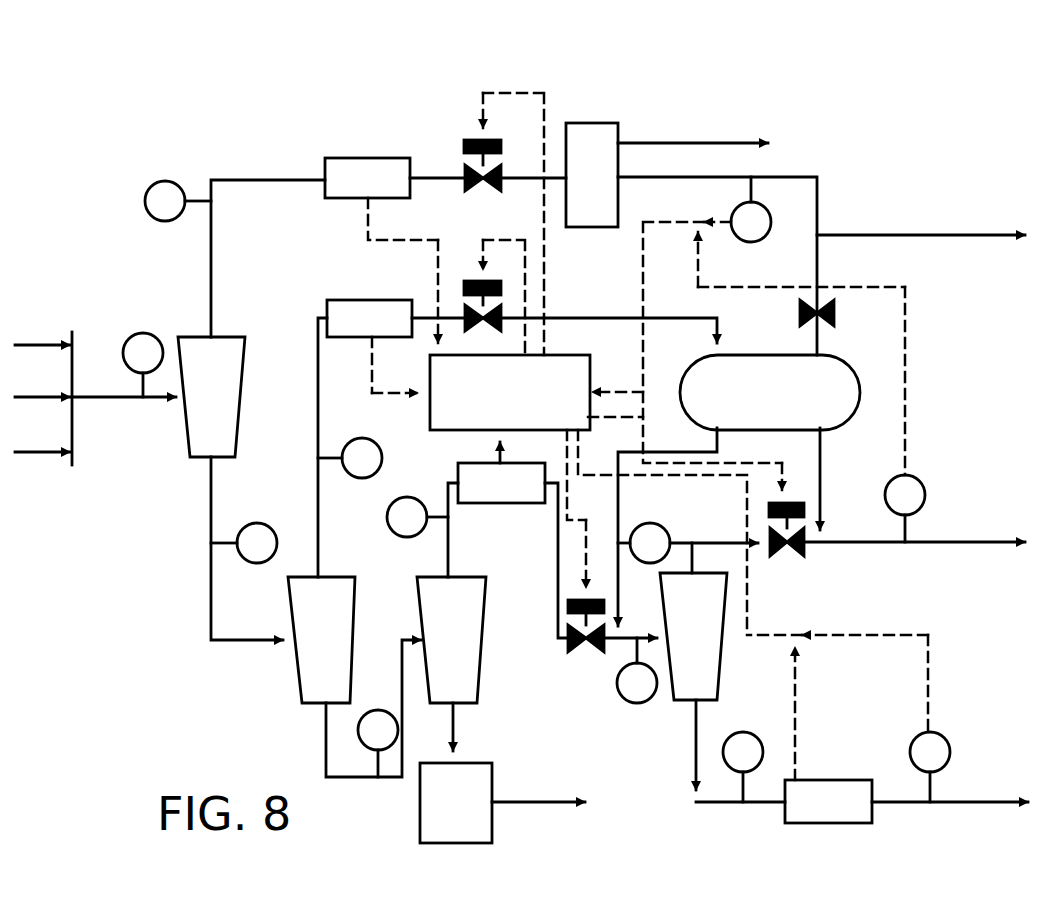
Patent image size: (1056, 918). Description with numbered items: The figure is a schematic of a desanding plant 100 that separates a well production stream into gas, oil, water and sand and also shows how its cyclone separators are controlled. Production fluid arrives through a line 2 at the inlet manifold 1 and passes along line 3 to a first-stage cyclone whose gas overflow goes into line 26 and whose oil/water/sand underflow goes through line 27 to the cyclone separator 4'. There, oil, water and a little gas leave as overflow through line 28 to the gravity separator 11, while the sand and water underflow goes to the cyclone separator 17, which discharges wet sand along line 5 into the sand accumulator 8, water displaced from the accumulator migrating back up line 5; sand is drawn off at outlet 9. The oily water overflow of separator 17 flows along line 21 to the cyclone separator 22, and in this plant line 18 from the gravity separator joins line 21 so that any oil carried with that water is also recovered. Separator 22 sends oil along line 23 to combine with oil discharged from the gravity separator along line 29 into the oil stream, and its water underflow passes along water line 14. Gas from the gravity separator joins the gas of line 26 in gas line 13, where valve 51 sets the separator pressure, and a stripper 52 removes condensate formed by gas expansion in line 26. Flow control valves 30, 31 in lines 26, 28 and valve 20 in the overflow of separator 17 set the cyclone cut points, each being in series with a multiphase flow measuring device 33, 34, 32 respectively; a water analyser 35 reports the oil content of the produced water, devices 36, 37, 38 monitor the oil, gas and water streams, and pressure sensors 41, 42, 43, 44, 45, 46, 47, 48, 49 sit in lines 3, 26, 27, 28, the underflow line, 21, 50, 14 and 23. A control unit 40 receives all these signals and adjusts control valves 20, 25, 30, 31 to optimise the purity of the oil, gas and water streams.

The desanding plant 100 is at (350, 92).
The inlet manifold 1 is at (72, 348).
The line 2 is at (35, 343).
The line 3 is at (97, 400).
The cyclone separator 4' is at (302, 640).
The line 5 is at (455, 725).
The sand accumulator 8 is at (420, 822).
The sand outlet 9 is at (553, 804).
The gravity separator 11 is at (755, 355).
The gas line 13 is at (908, 235).
The water line 14 is at (903, 804).
The cyclone separator 17 is at (480, 690).
The line 18 is at (622, 490).
The control valve 20 is at (567, 645).
The line 21 is at (448, 560).
The cyclone separator 22 is at (726, 660).
The line 23 is at (705, 540).
The control valve 25 is at (787, 557).
The line 26 is at (247, 178).
The line 27 is at (211, 620).
The line 28 is at (318, 320).
The line 29 is at (820, 472).
The flow control valve 30 is at (478, 138).
The flow control valve 31 is at (478, 280).
The multiphase flow measuring device 32 is at (522, 503).
The multiphase flow measuring device 33 is at (387, 158).
The multiphase flow measuring device 34 is at (350, 300).
The water analyser 35 is at (848, 780).
The multiphase flow measuring device 36 is at (925, 493).
The multiphase flow measuring device 37 is at (766, 238).
The multiphase flow measuring device 38 is at (950, 748).
The control unit 40 is at (430, 418).
The pressure sensor 41 is at (143, 333).
The pressure sensor 42 is at (145, 201).
The pressure sensor 43 is at (257, 523).
The pressure sensor 44 is at (382, 458).
The pressure sensor 45 is at (378, 710).
The pressure sensor 46 is at (387, 517).
The pressure sensor 47 is at (637, 703).
The pressure sensor 48 is at (743, 732).
The pressure sensor 49 is at (620, 528).
The line 50 is at (640, 636).
The valve 51 is at (836, 313).
The stripper 52 is at (593, 123).